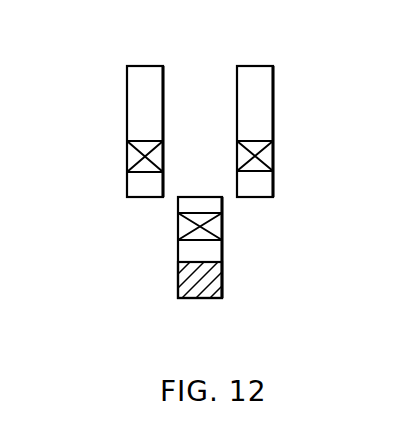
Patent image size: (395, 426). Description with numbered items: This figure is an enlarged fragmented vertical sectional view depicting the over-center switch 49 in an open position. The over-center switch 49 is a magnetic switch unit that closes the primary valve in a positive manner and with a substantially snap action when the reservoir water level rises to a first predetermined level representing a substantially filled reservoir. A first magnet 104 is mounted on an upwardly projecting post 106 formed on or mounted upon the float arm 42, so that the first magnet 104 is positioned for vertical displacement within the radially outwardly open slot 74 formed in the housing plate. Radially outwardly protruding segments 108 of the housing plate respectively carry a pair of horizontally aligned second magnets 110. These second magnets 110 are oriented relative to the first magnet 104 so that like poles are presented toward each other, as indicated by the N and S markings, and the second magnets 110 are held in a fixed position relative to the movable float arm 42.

The radially outwardly open slot 74 is at (200, 76).
The radially outwardly protruding segments 108 is at (135, 90).
The second magnets 110 is at (135, 155).
The over-center switch 49 is at (124, 245).
The first magnet 104 is at (222, 232).
The post 106 is at (185, 252).
The float arm 42 is at (207, 290).